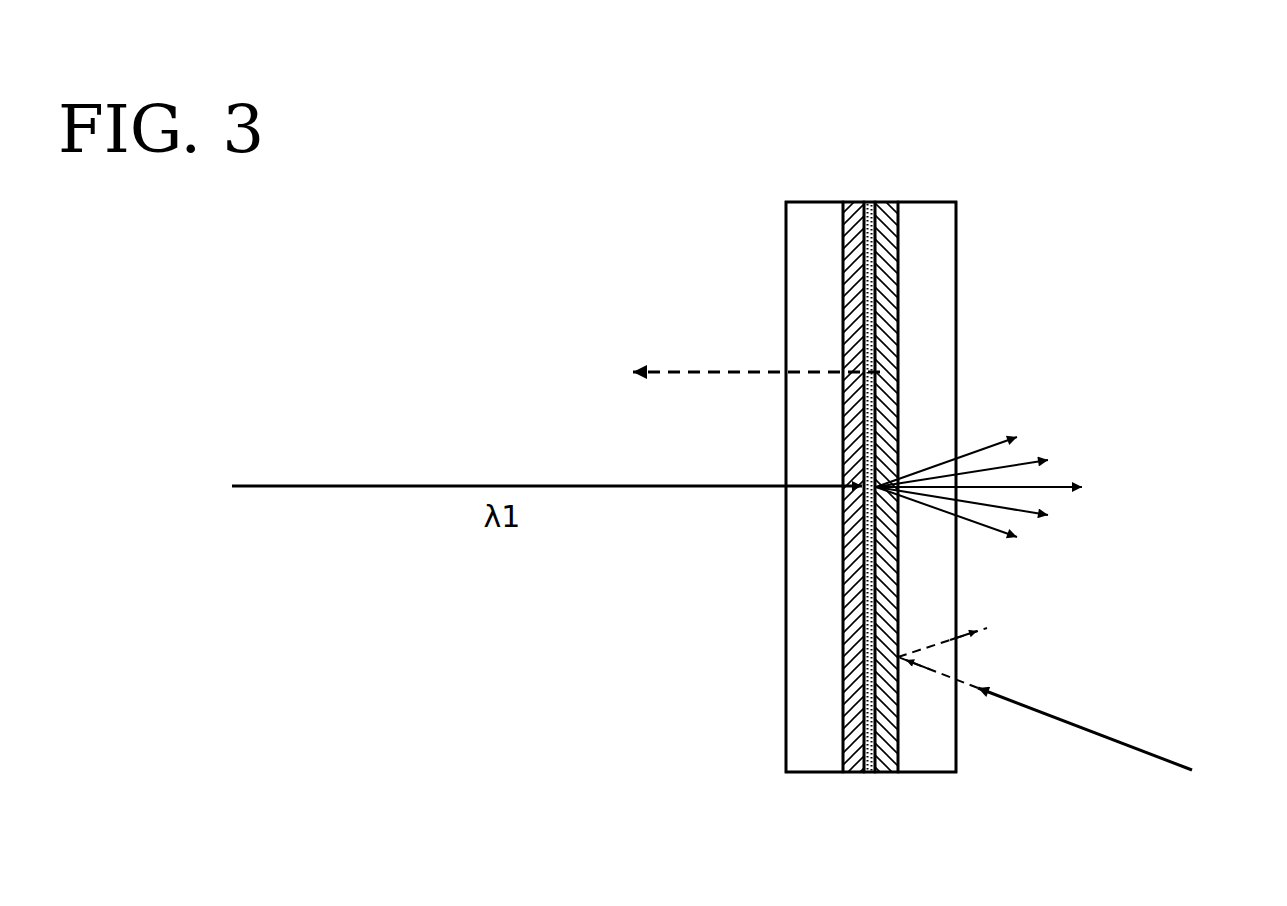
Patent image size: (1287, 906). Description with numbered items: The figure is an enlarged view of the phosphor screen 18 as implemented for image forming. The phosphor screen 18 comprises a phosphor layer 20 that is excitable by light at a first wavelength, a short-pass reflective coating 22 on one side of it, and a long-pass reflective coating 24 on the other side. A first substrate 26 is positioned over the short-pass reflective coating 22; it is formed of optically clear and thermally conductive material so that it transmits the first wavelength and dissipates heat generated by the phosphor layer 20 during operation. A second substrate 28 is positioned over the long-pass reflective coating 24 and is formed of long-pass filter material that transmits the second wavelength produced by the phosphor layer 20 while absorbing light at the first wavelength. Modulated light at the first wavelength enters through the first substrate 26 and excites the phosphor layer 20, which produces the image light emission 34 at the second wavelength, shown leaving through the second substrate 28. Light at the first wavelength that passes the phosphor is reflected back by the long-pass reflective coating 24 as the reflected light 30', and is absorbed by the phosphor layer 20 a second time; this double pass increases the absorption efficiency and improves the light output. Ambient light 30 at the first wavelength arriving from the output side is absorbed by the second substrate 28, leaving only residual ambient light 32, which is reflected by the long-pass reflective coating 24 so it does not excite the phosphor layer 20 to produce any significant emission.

The phosphor screen 18 is at (725, 158).
The phosphor layer 20 is at (873, 202).
The short-pass reflective coating 22 is at (853, 202).
The long-pass reflective coating 24 is at (887, 202).
The first substrate 26 is at (803, 202).
The second substrate 28 is at (938, 202).
The ambient light 30 is at (1066, 715).
The reflected light 30' is at (749, 299).
The residual ambient light 32 is at (973, 632).
The light emission 34 is at (1042, 485).